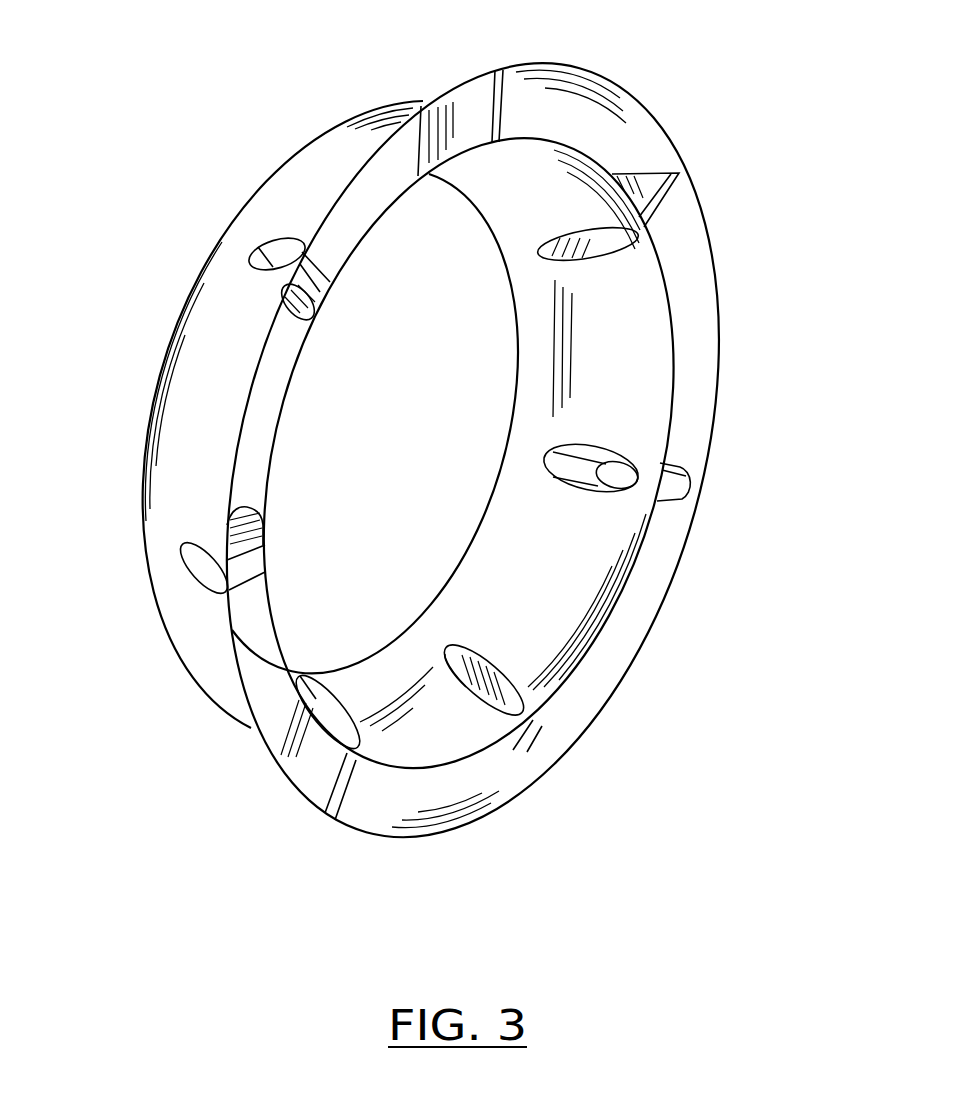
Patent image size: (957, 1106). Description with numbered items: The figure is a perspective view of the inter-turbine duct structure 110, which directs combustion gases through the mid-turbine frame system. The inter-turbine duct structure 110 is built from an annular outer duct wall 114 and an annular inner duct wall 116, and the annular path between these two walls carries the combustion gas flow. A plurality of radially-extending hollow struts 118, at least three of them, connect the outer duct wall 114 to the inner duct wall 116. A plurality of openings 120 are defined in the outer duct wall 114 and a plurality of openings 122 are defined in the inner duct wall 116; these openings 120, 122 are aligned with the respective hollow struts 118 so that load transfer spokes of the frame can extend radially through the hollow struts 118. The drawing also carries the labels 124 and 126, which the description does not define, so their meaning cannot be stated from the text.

The inter-turbine duct structure 110 is at (702, 125).
The annular outer duct wall 114 is at (363, 137).
The annular inner duct wall 116 is at (620, 343).
The hollow strut 118 is at (468, 118).
The opening 120 is at (187, 565).
The opening 122 is at (590, 247).
The rear edge of outer surface 124 is at (162, 364).
The inner bore 126 is at (470, 527).